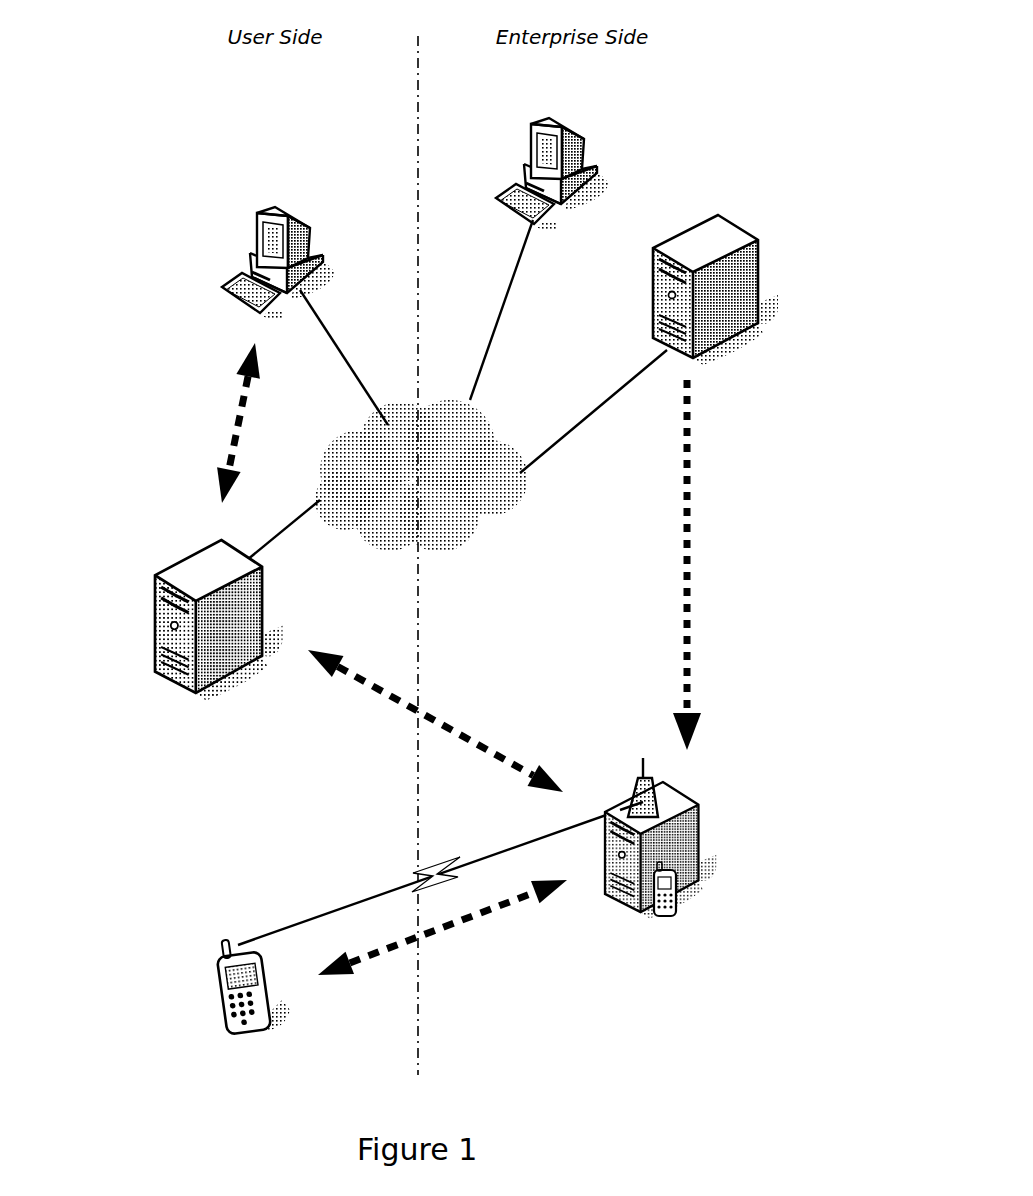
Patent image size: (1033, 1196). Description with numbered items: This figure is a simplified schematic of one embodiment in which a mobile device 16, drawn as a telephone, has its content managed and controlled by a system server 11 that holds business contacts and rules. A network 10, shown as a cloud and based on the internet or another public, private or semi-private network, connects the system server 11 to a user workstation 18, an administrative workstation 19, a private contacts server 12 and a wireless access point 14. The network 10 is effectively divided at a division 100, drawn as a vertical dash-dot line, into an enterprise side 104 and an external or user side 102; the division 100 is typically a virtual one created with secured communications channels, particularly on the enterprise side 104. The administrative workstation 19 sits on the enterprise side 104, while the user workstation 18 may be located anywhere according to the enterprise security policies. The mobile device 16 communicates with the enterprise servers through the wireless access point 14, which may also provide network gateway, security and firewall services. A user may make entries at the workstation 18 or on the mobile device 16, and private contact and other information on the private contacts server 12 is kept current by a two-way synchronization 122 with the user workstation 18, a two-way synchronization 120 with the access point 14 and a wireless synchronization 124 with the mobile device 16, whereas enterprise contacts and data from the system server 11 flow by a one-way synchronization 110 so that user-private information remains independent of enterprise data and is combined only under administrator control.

The division 100 is at (418, 542).
The user side 102 is at (274, 62).
The enterprise side 104 is at (571, 62).
The network 10 is at (477, 507).
The system server 11 is at (733, 230).
The private contacts server 12 is at (150, 678).
The wireless access point 14 is at (702, 832).
The mobile device 16 is at (218, 953).
The user workstation 18 is at (260, 213).
The administrative workstation 19 is at (590, 158).
The one-way synchronization 110 is at (710, 565).
The two-way synchronization 120 is at (435, 721).
The two-way synchronization 122 is at (198, 423).
The wireless synchronization 124 is at (442, 933).